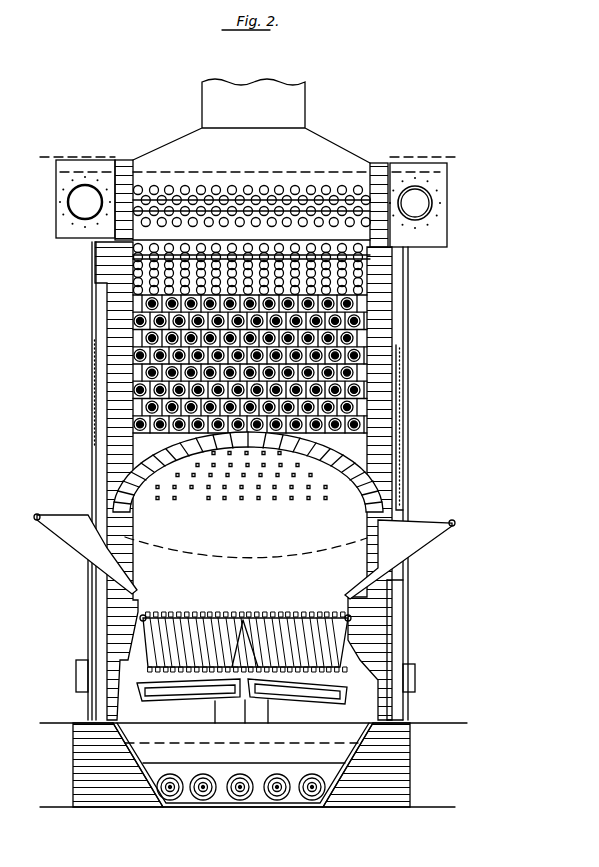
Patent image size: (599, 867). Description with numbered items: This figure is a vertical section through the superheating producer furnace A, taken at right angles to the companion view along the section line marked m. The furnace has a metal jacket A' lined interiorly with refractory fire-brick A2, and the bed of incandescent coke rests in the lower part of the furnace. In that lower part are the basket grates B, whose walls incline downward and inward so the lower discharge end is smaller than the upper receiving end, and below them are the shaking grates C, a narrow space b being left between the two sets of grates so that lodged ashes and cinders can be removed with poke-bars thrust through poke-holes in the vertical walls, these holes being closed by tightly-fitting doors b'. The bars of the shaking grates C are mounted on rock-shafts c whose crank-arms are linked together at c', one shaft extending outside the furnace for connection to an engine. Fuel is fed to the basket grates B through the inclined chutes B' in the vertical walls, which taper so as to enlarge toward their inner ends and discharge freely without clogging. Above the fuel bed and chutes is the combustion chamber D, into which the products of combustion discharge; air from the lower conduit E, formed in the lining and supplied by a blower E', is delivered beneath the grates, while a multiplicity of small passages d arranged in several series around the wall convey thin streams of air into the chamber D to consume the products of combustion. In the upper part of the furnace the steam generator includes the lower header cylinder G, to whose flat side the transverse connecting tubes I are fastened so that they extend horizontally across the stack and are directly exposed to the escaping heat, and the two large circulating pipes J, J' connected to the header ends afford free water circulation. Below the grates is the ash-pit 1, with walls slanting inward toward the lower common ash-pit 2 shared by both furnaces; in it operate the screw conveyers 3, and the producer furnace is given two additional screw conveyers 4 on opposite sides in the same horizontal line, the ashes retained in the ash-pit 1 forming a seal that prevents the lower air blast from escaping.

The cylinder G is at (242, 177).
The transverse connecting tubes I is at (352, 183).
The section line m is at (255, 160).
The circulating pipe J is at (66, 199).
The circulating pipe J' is at (435, 205).
The superheating producer furnace A is at (390, 483).
The metal jacket A' is at (416, 483).
The piston blower E' is at (419, 410).
The lower air conduit E is at (414, 650).
The small passages d is at (192, 510).
The combustion chamber D is at (241, 491).
The refractory material A2 is at (373, 607).
The inclined chutes B' is at (244, 556).
The basket grates B is at (245, 633).
The narrow space b is at (248, 657).
The doors b' is at (247, 681).
The shaking grates C is at (242, 700).
The rock-shafts c is at (225, 712).
The crank-arm links c' is at (256, 711).
The ash-pit 1 is at (241, 737).
The common ash-pit 2 is at (270, 800).
The screw conveyers 3 is at (240, 797).
The additional screw conveyers 4 is at (312, 800).